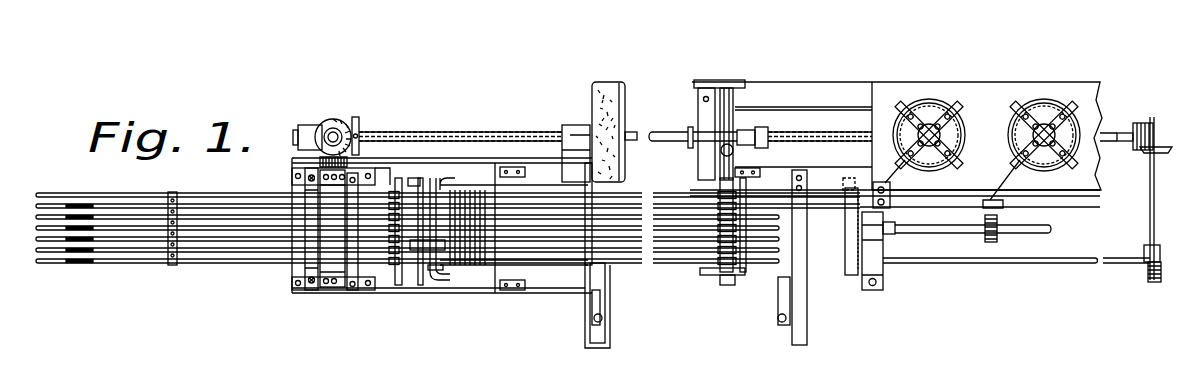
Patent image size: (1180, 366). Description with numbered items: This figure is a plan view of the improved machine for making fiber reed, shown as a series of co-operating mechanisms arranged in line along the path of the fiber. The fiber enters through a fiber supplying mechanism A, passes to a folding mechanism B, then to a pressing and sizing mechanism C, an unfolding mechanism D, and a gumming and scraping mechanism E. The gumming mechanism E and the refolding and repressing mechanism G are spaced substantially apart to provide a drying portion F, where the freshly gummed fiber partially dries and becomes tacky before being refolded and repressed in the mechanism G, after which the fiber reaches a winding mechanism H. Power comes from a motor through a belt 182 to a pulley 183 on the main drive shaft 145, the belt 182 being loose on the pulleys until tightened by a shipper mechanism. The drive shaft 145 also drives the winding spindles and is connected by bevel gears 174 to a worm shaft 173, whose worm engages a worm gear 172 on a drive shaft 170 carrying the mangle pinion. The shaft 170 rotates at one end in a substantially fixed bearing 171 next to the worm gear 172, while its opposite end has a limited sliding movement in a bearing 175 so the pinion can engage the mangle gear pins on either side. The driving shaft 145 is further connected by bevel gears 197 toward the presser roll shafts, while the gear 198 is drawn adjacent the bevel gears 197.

The fiber supplying mechanism A is at (145, 265).
The folding mechanism B is at (303, 277).
The pressing and sizing mechanism C is at (340, 270).
The unfolding mechanism D is at (402, 270).
The gumming and scraping mechanism E is at (468, 275).
The drying portion F is at (613, 257).
The refolding and repressing mechanism G is at (713, 276).
The winding mechanism H is at (985, 100).
The drive shaft 145 is at (470, 132).
The drive shaft 170 is at (1037, 261).
The bearing 171 is at (1148, 273).
The worm gear 172 is at (1147, 254).
The worm shaft 173 is at (1150, 198).
The bevel gears 174 is at (1140, 125).
The bearing 175 is at (875, 268).
The belt 182 is at (607, 82).
The pulley 183 is at (628, 98).
The bevel gears 197 is at (342, 122).
The gear wheel 198 is at (330, 132).